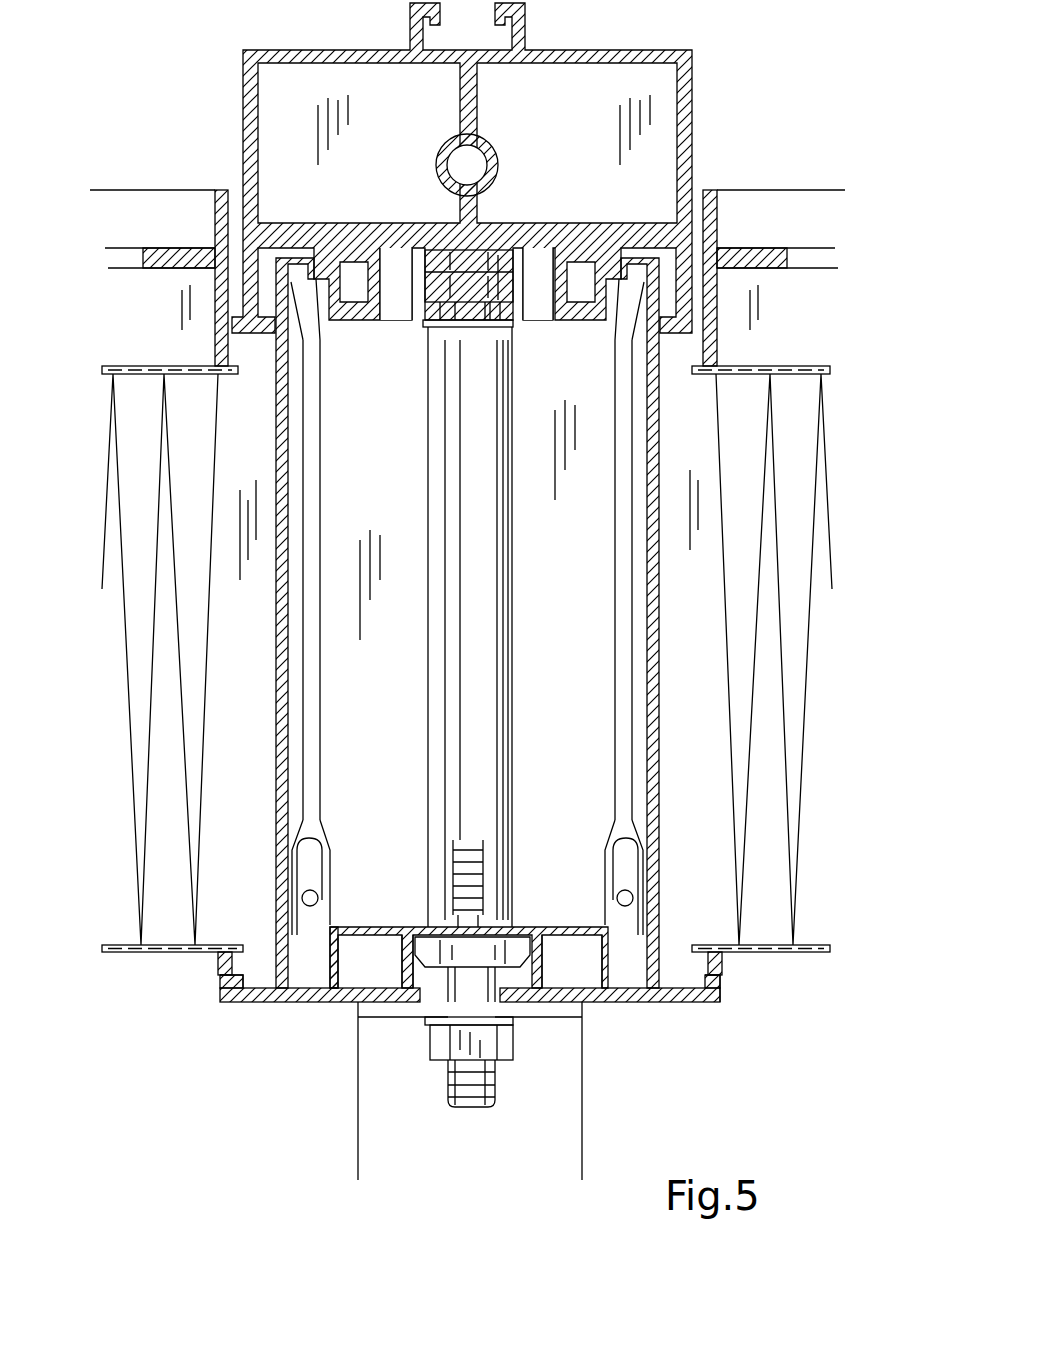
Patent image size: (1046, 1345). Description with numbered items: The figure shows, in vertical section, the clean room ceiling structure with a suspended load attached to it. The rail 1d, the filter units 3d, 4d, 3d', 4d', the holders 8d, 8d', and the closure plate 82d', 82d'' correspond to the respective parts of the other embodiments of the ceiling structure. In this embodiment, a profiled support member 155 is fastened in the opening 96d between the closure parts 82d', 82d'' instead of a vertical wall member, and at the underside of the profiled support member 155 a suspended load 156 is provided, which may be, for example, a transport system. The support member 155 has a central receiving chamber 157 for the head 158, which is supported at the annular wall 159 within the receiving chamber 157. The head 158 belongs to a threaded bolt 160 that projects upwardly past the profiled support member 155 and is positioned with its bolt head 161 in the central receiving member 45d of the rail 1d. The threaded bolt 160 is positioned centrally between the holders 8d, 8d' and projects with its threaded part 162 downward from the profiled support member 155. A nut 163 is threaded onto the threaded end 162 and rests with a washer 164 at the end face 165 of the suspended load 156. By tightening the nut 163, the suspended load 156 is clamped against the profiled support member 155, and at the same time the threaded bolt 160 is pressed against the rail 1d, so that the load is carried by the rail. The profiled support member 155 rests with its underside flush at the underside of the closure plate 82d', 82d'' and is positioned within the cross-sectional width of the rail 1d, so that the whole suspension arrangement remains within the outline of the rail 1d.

The rail 1d is at (695, 100).
The filter unit 3d is at (786, 620).
The filter unit 3d' is at (179, 620).
The filter unit 4d is at (774, 232).
The filter unit 4d' is at (159, 222).
The holder 8d is at (727, 623).
The holder 8d' is at (219, 623).
The central receiving member 45d is at (416, 332).
The closure plate 82d' is at (219, 1043).
The closure plate 82d'' is at (766, 1043).
The opening 96d is at (330, 1004).
The profiled support member 155 is at (574, 928).
The suspended load 156 is at (343, 1135).
The central receiving chamber 157 is at (418, 935).
The head 158 is at (486, 950).
The annular wall 159 is at (503, 980).
The threaded bolt 160 is at (514, 600).
The bolt head 161 is at (487, 285).
The threaded part 162 is at (496, 1092).
The nut 163 is at (512, 1050).
The washer 164 is at (515, 1021).
The end face 165 is at (543, 1008).